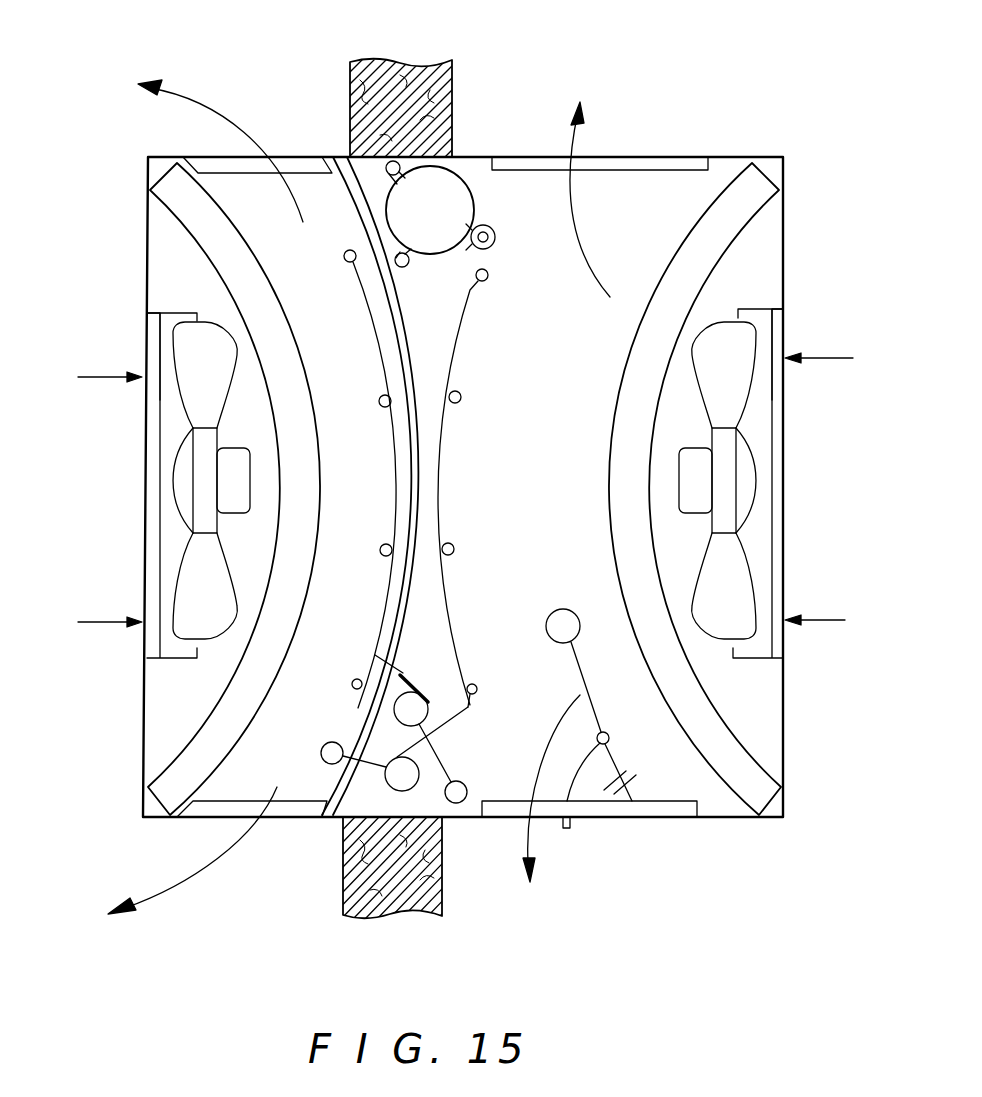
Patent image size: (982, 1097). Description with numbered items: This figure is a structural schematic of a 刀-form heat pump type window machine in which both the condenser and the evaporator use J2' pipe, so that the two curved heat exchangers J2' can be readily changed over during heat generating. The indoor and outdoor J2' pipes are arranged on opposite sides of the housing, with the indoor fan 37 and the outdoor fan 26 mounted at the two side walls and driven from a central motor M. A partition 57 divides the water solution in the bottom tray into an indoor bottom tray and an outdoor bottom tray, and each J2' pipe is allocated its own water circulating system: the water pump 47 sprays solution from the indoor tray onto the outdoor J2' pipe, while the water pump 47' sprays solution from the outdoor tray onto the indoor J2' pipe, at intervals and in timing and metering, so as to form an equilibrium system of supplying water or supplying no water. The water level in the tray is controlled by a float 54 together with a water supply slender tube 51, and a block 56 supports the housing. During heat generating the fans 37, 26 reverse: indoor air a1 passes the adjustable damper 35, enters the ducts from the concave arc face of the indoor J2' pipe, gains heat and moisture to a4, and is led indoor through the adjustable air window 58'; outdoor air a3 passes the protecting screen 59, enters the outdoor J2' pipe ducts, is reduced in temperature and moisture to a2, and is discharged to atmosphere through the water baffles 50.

The support block 56 is at (375, 90).
The partition 57 is at (338, 157).
The adjustable air window 58' is at (254, 487).
The water baffle 50 is at (546, 162).
The motor M is at (443, 193).
The adjustable damper 35 is at (153, 332).
The indoor fan 37 is at (200, 386).
The protecting screen 59 is at (778, 333).
The outdoor fan 26 is at (733, 627).
The J2' pipe J2' is at (454, 489).
The water pump 47 is at (410, 806).
The water pump 47' is at (441, 718).
The float 54 is at (554, 612).
The water supply slender tube 51 is at (572, 826).
The indoor air a1 is at (110, 482).
The air state a2 is at (566, 492).
The outdoor air a3 is at (819, 476).
The air state a4 is at (205, 493).